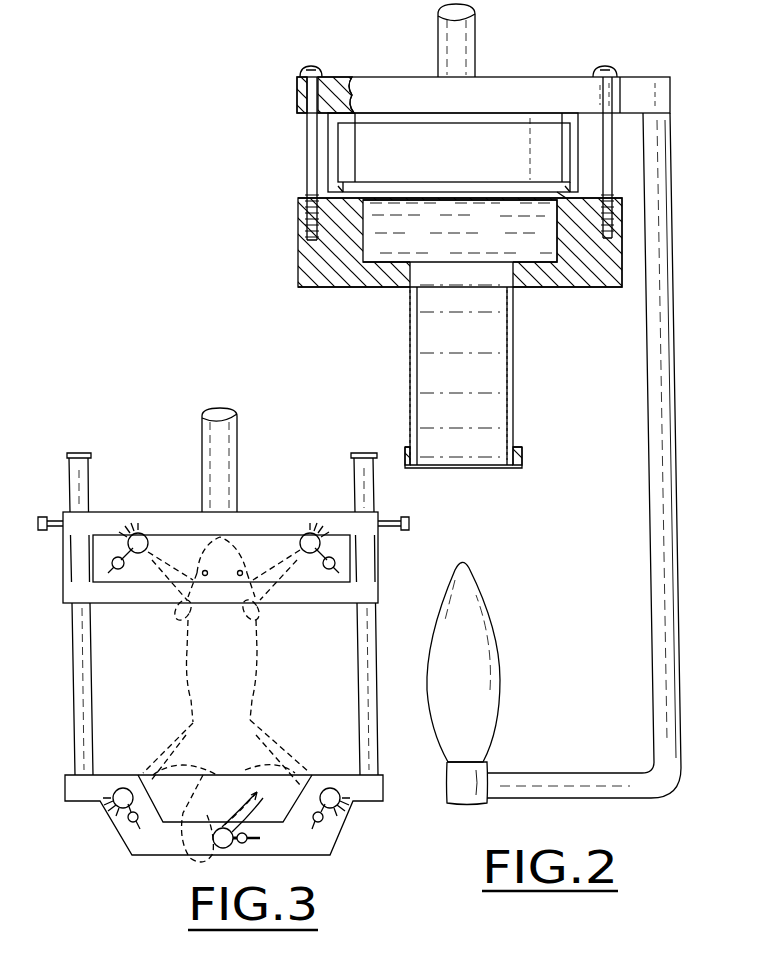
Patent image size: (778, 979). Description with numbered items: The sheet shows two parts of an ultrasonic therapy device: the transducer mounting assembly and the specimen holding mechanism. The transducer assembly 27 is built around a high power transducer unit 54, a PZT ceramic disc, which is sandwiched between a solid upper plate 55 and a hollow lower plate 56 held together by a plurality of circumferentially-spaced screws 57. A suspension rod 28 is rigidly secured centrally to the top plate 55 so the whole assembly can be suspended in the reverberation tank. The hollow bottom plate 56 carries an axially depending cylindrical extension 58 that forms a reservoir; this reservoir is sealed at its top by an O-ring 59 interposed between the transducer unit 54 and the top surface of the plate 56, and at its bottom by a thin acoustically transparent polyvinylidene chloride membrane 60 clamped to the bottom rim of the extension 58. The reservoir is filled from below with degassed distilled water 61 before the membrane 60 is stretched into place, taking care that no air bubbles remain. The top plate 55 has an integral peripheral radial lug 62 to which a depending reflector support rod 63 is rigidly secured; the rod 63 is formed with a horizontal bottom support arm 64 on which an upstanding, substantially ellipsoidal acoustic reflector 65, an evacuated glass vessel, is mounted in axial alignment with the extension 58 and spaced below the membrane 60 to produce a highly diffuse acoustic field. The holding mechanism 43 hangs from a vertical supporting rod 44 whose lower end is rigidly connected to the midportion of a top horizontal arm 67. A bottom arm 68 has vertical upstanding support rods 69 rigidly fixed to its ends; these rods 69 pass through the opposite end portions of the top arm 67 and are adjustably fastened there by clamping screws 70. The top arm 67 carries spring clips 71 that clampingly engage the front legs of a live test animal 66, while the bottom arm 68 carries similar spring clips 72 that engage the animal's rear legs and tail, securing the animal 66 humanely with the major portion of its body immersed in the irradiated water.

In FIG. 2, the transducer assembly 27 is at (652, 53).
In FIG. 2, the suspension rod 28 is at (475, 46).
In FIG. 2, the transducer unit 54 is at (442, 163).
In FIG. 2, the solid upper plate 55 is at (383, 77).
In FIG. 2, the hollow lower plate 56 is at (330, 287).
In FIG. 2, the screws 57 is at (308, 145).
In FIG. 2, the cylindrical extension 58 is at (513, 372).
In FIG. 2, the O-ring 59 is at (568, 192).
In FIG. 2, the membrane 60 is at (472, 469).
In FIG. 2, the degassed distilled water 61 is at (443, 345).
In FIG. 2, the radial lug 62 is at (665, 93).
In FIG. 2, the reflector support rod 63 is at (655, 462).
In FIG. 2, the bottom support arm 64 is at (565, 783).
In FIG. 2, the acoustic reflector 65 is at (500, 660).
In FIG. 3, the holding mechanism 43 is at (323, 469).
In FIG. 3, the vertical supporting rod 44 is at (231, 450).
In FIG. 3, the test animal 66 is at (260, 668).
In FIG. 3, the top horizontal arm 67 is at (158, 522).
In FIG. 3, the bottom arm 68 is at (310, 848).
In FIG. 3, the support rods 69 is at (93, 703).
In FIG. 3, the clamping screws 70 is at (44, 517).
In FIG. 3, the spring clips 71 is at (148, 536).
In FIG. 3, the spring clips 72 is at (122, 790).